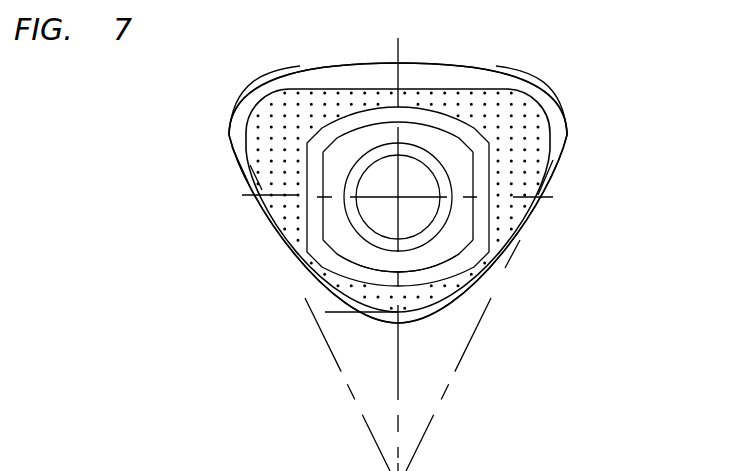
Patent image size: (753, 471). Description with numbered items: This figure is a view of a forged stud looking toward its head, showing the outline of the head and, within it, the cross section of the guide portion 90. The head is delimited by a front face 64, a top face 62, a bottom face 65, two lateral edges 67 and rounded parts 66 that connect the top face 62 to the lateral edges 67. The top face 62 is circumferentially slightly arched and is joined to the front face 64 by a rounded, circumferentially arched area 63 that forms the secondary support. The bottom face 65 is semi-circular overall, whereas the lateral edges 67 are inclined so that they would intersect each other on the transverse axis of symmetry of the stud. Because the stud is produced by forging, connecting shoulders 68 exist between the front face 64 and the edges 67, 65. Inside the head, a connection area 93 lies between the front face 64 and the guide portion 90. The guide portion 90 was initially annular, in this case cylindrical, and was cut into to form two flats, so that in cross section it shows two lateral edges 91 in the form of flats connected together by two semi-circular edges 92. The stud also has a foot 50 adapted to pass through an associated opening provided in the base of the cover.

The foot 50 is at (472, 300).
The top face 62 is at (421, 64).
The rounded circumferentially arched area 63 is at (324, 75).
The front face 64 is at (517, 203).
The bottom face 65 is at (335, 308).
The rounded parts 66 is at (230, 112).
The lateral edges 67 is at (237, 158).
The connecting shoulders 68 is at (252, 177).
The guide portion 90 is at (385, 262).
The lateral edges in the form of flats 91 is at (323, 212).
The semi-circular edges 92 is at (451, 129).
The connection area 93 is at (317, 252).